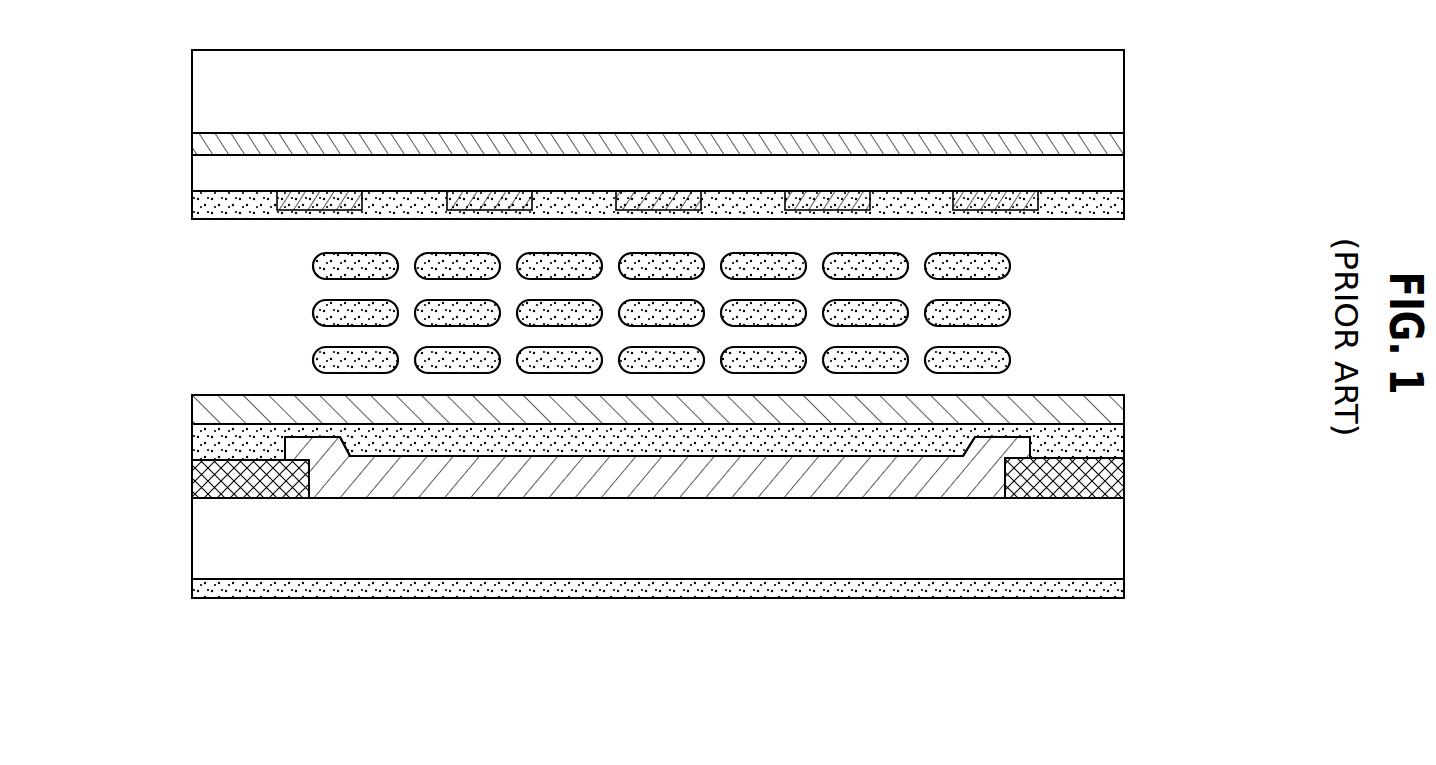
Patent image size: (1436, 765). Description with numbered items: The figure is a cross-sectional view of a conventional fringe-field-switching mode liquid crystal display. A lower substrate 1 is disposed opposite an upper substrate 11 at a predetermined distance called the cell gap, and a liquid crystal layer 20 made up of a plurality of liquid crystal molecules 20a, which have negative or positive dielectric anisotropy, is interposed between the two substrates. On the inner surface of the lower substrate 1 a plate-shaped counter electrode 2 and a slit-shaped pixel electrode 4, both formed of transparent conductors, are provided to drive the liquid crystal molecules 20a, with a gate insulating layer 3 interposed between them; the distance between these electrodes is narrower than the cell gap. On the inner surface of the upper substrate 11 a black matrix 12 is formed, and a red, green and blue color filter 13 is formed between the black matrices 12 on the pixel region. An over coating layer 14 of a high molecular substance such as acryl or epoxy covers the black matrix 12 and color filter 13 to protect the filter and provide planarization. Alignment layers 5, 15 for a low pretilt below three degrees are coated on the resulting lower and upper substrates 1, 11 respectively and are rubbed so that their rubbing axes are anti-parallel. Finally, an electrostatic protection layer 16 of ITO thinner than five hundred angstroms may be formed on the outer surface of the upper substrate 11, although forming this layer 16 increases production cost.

The lower substrate 1 is at (205, 91).
The counter electrode 2 is at (205, 148).
The gate insulating layer 3 is at (205, 168).
The pixel electrode 4 is at (293, 205).
The alignment layer 5 is at (205, 207).
The liquid crystal layer 20 is at (557, 313).
The liquid crystal molecules 20a is at (293, 358).
The alignment layer 15 is at (210, 407).
The over coating layer 14 is at (210, 439).
The color filter 13 is at (928, 487).
The black matrix 12 is at (210, 487).
The upper substrate 11 is at (210, 534).
The electrostatic protection layer 16 is at (210, 592).